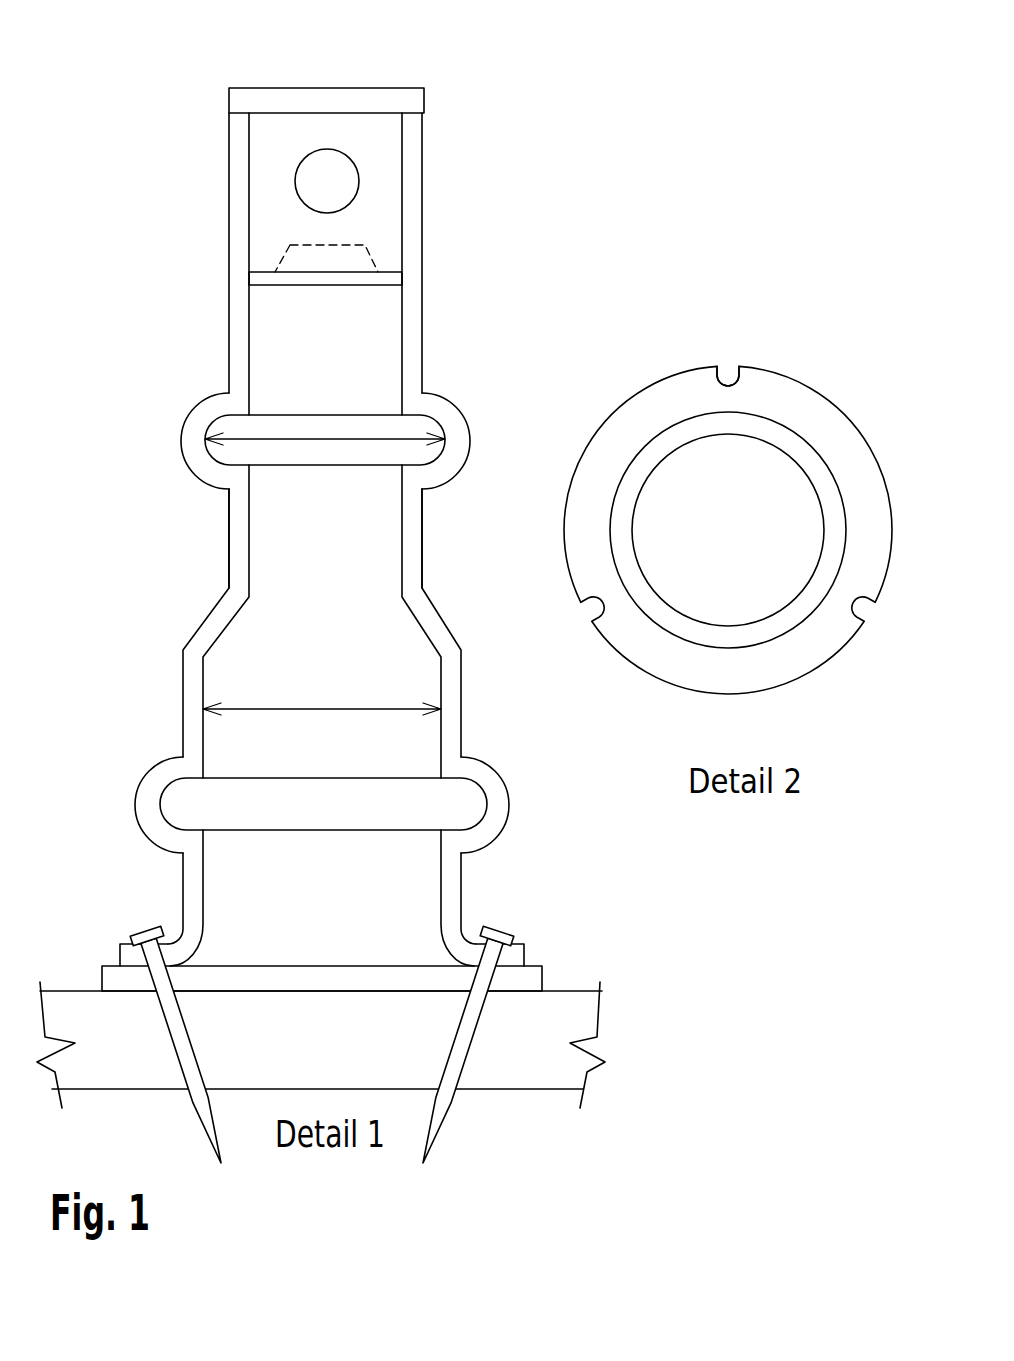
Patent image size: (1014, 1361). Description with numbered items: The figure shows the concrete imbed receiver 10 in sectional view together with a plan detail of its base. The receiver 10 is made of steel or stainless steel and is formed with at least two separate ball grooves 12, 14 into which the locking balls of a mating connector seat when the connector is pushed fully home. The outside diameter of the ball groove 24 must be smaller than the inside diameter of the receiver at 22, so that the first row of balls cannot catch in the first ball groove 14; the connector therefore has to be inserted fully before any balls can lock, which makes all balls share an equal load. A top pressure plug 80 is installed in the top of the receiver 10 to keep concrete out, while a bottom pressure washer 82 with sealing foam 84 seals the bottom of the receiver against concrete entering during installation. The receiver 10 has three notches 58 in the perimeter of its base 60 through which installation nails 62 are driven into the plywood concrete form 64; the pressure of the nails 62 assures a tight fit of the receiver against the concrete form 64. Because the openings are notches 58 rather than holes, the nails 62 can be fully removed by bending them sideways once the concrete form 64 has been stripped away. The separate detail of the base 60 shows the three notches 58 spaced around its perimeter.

The concrete imbed receiver 10 is at (422, 330).
The ball groove 12 is at (472, 445).
The first ball groove 14 is at (506, 832).
The inside diameter of the receiver 22 is at (203, 709).
The ball groove outside diameter 24 is at (205, 440).
The notch 58 is at (726, 372).
The base 60 is at (805, 380).
The nail 62 is at (193, 1113).
The concrete form 64 is at (580, 991).
The top pressure plug 80 is at (355, 86).
The bottom pressure washer 82 is at (360, 168).
The sealing foam 84 is at (543, 976).